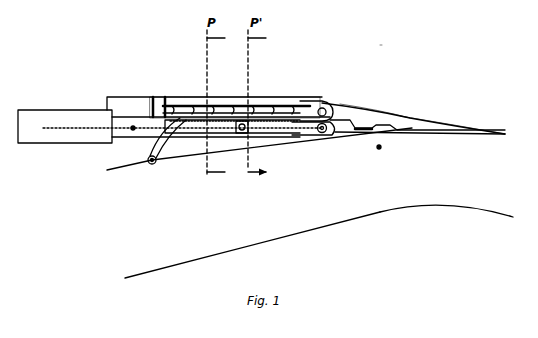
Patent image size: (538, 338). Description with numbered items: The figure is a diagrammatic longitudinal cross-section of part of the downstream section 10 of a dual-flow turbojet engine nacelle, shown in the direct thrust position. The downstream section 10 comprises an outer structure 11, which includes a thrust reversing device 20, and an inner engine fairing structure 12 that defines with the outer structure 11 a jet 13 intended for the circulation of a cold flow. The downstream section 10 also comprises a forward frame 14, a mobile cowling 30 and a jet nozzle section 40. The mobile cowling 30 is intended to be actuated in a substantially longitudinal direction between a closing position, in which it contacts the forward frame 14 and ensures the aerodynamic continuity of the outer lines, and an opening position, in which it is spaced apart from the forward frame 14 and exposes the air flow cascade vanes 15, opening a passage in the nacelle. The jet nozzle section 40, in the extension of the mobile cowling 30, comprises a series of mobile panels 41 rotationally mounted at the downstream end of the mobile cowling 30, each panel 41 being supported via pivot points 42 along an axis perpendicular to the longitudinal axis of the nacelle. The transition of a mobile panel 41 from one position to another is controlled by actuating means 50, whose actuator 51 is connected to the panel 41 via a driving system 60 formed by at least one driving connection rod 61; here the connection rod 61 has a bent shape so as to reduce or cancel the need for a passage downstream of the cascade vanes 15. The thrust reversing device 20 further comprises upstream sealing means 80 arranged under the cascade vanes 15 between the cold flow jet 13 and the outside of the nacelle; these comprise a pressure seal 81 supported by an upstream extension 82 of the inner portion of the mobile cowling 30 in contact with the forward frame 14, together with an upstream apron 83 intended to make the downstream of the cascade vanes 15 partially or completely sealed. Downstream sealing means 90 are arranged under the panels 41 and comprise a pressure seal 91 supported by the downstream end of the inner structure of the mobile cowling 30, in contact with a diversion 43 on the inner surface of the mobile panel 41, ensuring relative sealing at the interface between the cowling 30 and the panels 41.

The downstream section 10 is at (386, 44).
The outer structure 11 is at (163, 90).
The inner engine fairing structure 12 is at (180, 262).
The jet 13 is at (453, 186).
The forward frame 14 is at (130, 170).
The air flow cascade vanes 15 is at (192, 97).
The thrust reversing device 20 is at (290, 56).
The mobile cowling 30 is at (287, 97).
The jet nozzle section 40 is at (380, 102).
The mobile panel 41 is at (460, 124).
The pivot point 42 is at (383, 150).
The diversion 43 is at (403, 118).
The actuating means 50 is at (228, 97).
The actuator 51 is at (236, 135).
The driving system 60 is at (308, 138).
The driving connection rod 61 is at (292, 140).
The upstream sealing means 80 is at (160, 165).
The pressure seal 81 is at (148, 159).
The upstream extension 82 is at (154, 165).
The upstream apron 83 is at (136, 125).
The downstream sealing means 90 is at (379, 118).
The pressure seal 91 is at (373, 122).